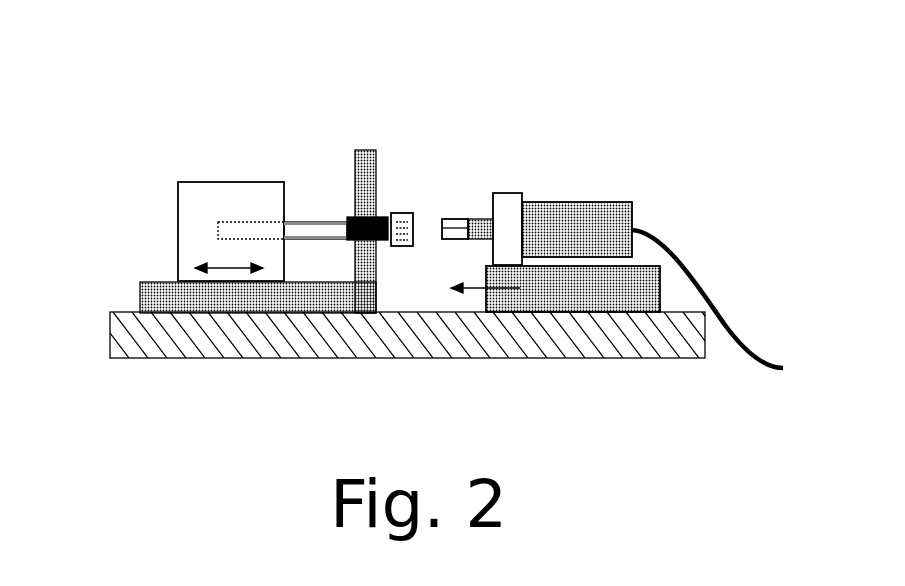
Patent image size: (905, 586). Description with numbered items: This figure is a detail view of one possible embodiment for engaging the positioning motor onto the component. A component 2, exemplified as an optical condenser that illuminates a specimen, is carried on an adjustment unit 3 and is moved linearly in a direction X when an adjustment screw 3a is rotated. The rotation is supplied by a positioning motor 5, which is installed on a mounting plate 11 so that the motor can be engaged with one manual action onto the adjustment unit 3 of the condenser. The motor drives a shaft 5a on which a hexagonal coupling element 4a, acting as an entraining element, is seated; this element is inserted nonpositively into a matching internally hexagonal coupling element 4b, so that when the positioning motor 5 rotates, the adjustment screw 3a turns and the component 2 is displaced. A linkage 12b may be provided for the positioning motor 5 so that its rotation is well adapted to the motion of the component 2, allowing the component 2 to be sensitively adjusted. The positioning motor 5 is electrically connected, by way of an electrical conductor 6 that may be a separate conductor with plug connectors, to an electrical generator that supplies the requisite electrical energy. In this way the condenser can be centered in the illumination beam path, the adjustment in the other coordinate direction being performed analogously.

The component 2 is at (192, 230).
The adjustment unit 3 is at (365, 182).
The adjustment screw 3a is at (327, 228).
The hexagonal coupling element 4a is at (448, 228).
The internally hexagonal coupling element 4b is at (402, 225).
The positioning motor 5 is at (618, 230).
The shaft 5a is at (477, 227).
The electrical conductor 6 is at (693, 270).
The mounting plate 11 is at (560, 332).
The linkage 12b is at (513, 205).